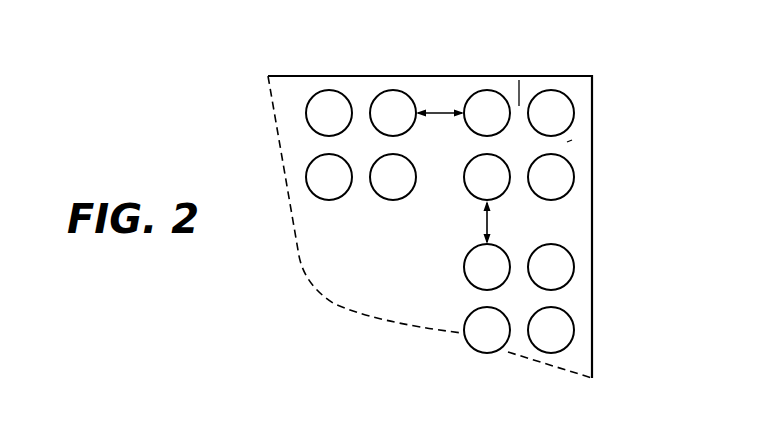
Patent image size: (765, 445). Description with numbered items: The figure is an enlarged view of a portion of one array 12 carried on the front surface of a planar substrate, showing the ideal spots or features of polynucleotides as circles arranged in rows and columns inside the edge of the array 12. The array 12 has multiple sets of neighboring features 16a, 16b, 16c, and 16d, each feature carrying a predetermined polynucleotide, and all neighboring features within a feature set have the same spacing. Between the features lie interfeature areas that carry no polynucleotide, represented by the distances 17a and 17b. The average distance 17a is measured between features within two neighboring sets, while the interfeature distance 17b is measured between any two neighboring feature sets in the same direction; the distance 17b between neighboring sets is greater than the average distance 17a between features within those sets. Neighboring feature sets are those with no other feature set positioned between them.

The array 12 is at (582, 218).
The neighboring feature 16a is at (487, 90).
The neighboring feature 16b is at (393, 90).
The neighboring feature 16c is at (315, 178).
The neighboring feature 16d is at (407, 160).
The average distance between features within a set 17a is at (519, 80).
The interfeature distance between neighboring feature sets 17b is at (445, 105).